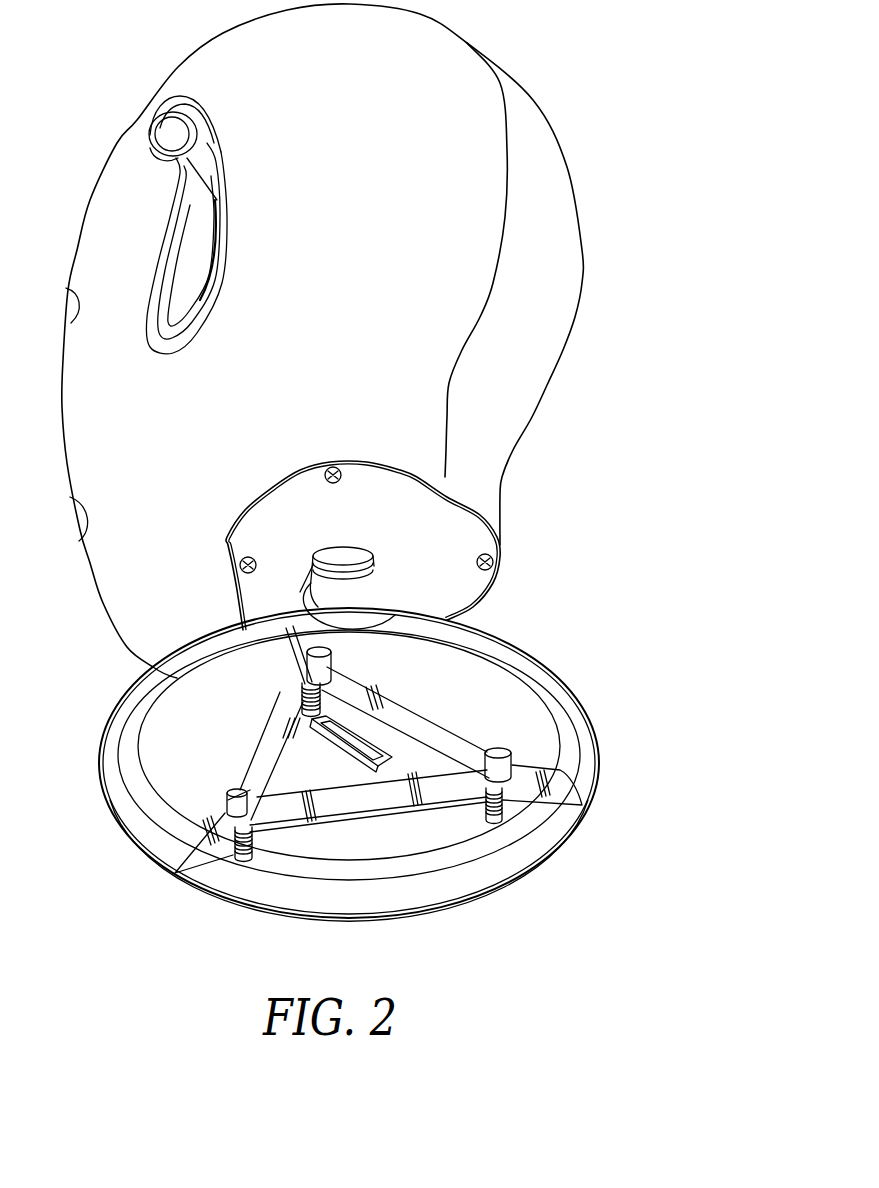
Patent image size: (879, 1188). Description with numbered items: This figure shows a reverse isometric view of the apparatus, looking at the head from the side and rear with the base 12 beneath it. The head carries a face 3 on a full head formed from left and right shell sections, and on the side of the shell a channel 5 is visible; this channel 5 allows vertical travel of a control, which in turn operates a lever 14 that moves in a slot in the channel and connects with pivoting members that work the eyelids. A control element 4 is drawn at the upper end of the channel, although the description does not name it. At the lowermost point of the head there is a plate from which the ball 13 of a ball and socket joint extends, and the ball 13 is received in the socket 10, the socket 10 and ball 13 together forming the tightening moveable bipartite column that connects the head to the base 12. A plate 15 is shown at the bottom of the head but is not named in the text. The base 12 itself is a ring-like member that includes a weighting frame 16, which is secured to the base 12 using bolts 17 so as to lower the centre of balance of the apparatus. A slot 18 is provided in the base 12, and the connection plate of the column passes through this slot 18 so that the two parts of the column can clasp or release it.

The face 3 is at (130, 203).
The knob 4 is at (177, 126).
The lever 14 is at (203, 180).
The channel 5 is at (202, 253).
The mounting plate 15 is at (447, 542).
The ball 13 is at (350, 567).
The socket 10 is at (390, 605).
The base 12 is at (137, 690).
The weighting frame 16 is at (267, 757).
The bolts 17 is at (244, 860).
The slot 18 is at (370, 767).